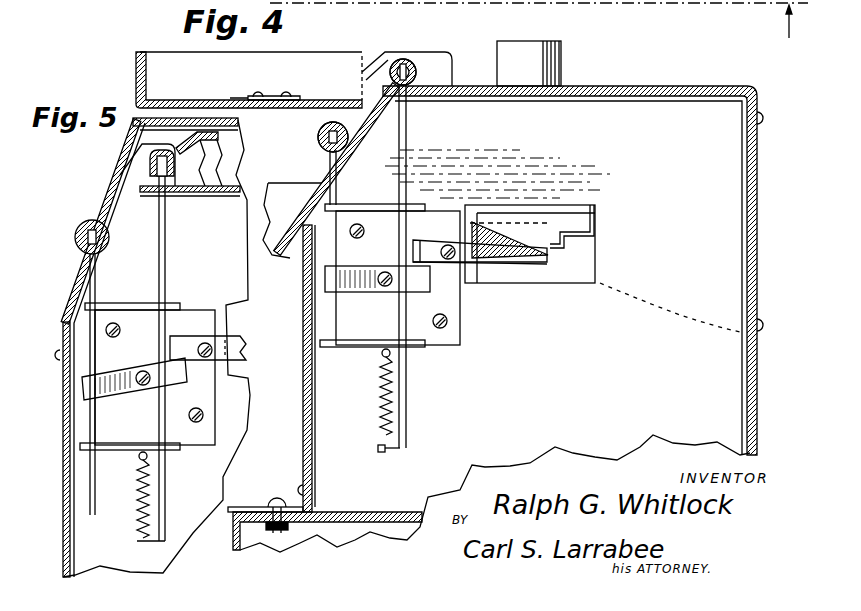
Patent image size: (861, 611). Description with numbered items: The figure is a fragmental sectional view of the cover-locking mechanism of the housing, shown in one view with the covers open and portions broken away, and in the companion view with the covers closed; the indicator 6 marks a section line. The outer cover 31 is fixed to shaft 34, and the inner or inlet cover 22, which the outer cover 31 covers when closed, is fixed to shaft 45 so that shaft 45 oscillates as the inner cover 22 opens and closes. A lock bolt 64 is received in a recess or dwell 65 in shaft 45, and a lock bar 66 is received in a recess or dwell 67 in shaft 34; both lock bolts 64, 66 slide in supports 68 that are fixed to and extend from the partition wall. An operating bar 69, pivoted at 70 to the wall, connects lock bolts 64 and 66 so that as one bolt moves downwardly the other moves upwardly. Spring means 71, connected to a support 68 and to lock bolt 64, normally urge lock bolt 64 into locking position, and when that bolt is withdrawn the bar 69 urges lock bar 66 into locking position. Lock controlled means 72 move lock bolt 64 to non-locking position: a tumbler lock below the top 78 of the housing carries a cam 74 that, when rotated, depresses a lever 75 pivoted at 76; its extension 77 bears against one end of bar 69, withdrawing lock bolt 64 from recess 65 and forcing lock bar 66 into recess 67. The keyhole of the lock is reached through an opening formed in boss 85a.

In FIG. 4, the section indicator 6 is at (778, 21).
In FIG. 4, the inner cover 22 is at (296, 58).
In FIG. 5, the inner cover 22 is at (206, 160).
In FIG. 4, the outer cover 31 is at (292, 220).
In FIG. 5, the outer cover 31 is at (152, 347).
In FIG. 4, the shaft 34 is at (318, 147).
In FIG. 5, the shaft 34 is at (78, 225).
In FIG. 4, the shaft 45 is at (410, 64).
In FIG. 5, the shaft 45 is at (150, 160).
In FIG. 4, the lock bolt 64 is at (408, 116).
In FIG. 5, the lock bolt 64 is at (168, 216).
In FIG. 4, the recess or dwell 65 is at (400, 62).
In FIG. 4, the lock bar 66 is at (343, 196).
In FIG. 5, the lock bar 66 is at (88, 271).
In FIG. 4, the recess or dwell 67 is at (318, 133).
In FIG. 4, the supports 68 is at (380, 204).
In FIG. 5, the supports 68 is at (120, 303).
In FIG. 4, the operating bar 69 is at (362, 268).
In FIG. 5, the operating bar 69 is at (128, 372).
In FIG. 5, the pivot 70 is at (146, 390).
In FIG. 4, the spring means 71 is at (380, 410).
In FIG. 5, the spring means 71 is at (136, 494).
In FIG. 4, the lock controlled means 72 is at (584, 246).
In FIG. 4, the cam 74 is at (550, 262).
In FIG. 4, the lever 75 is at (480, 262).
In FIG. 4, the pivot 76 is at (448, 245).
In FIG. 4, the extension 77 is at (424, 242).
In FIG. 4, the top of housing 78 is at (620, 98).
In FIG. 4, the boss 85a is at (528, 48).